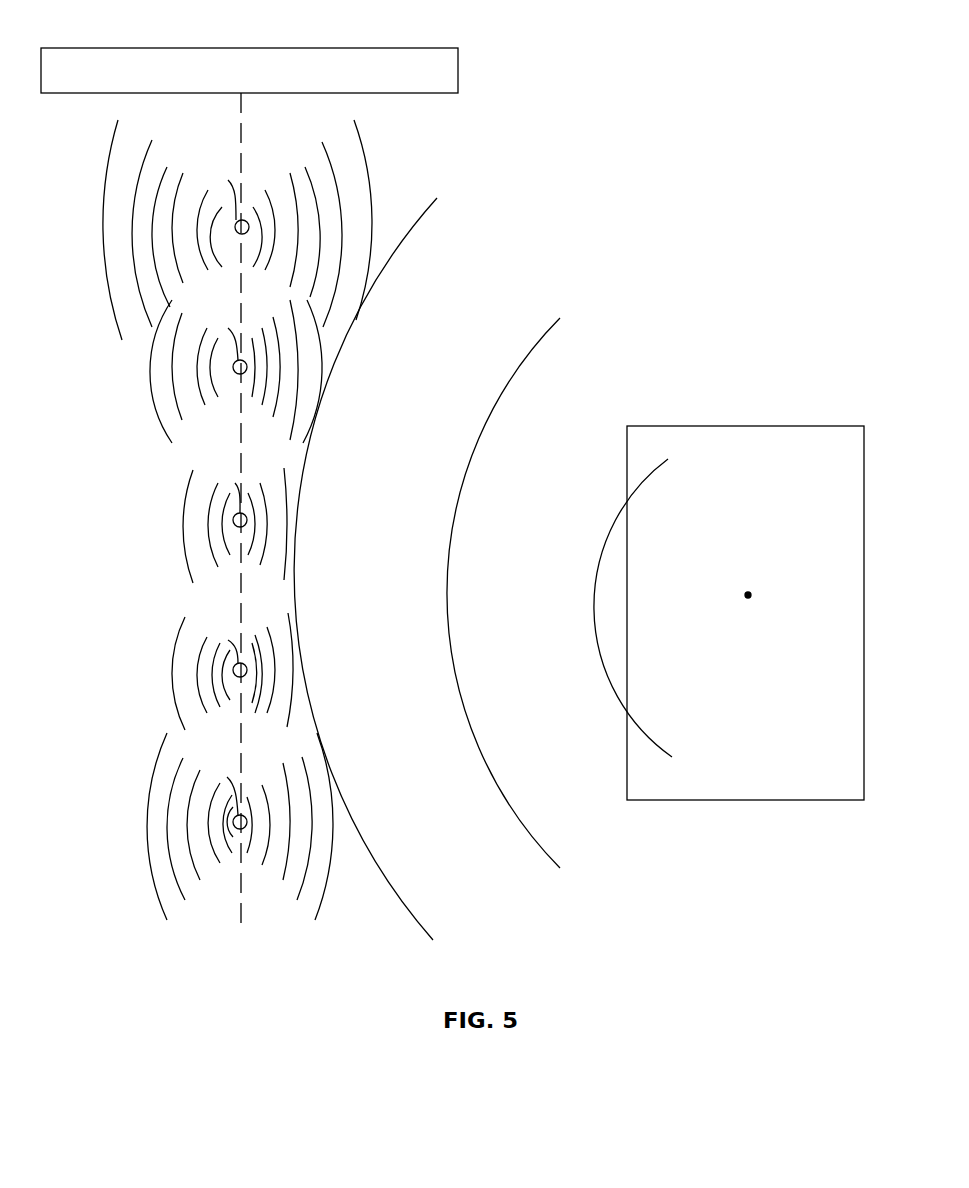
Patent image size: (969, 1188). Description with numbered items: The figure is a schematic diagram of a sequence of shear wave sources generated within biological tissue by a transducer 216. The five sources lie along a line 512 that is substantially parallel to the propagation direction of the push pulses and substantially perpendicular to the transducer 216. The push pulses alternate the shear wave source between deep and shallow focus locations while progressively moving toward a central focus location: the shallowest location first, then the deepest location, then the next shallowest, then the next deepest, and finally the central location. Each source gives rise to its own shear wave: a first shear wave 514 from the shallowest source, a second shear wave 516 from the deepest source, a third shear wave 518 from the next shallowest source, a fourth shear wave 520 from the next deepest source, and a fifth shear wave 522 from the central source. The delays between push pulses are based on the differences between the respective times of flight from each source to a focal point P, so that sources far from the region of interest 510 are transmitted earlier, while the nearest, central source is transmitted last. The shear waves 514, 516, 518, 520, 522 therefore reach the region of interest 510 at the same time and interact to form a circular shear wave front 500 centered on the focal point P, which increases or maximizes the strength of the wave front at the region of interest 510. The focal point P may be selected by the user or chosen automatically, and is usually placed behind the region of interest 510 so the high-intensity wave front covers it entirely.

The transducer 216 is at (243, 48).
The shear wave front 500 is at (418, 220).
The region of interest 510 is at (790, 426).
The line 512 is at (240, 880).
The first shear wave 514 is at (358, 133).
The second shear wave 516 is at (333, 883).
The third shear wave 518 is at (322, 347).
The fourth shear wave 520 is at (293, 712).
The fifth shear wave 522 is at (287, 472).